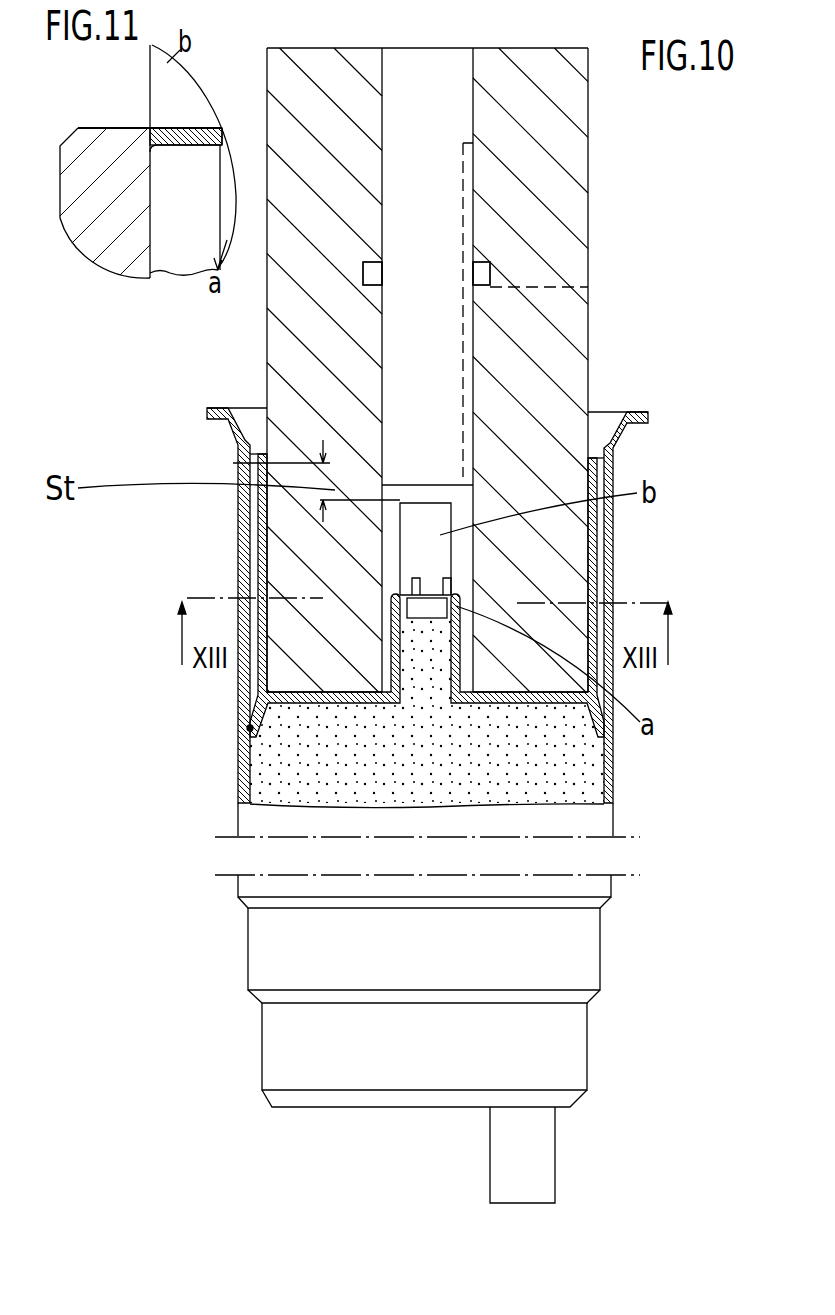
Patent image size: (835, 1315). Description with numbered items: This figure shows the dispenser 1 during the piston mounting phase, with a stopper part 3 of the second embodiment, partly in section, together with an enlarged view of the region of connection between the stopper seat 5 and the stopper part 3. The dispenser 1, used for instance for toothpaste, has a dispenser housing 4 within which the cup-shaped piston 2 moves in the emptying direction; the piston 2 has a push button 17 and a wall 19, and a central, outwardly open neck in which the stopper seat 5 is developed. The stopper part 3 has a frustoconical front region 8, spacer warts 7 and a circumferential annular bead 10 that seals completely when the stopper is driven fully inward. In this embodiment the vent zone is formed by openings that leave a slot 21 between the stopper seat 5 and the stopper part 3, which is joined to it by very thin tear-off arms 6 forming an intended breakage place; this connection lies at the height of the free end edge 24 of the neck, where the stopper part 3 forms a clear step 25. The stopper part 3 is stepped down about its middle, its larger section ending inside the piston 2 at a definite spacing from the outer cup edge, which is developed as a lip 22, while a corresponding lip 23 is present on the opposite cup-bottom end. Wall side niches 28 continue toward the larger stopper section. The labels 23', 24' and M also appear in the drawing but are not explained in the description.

In FIG. 10, the dispenser 1 is at (612, 775).
In FIG. 10, the piston 2 is at (585, 943).
In FIG. 11, the stopper part 3 is at (195, 92).
In FIG. 10, the dispenser housing 4 is at (312, 1107).
In FIG. 10, the stopper seat 5 is at (537, 1165).
In FIG. 11, the tear-off arms 6 is at (162, 137).
In FIG. 10, the tear-off arms 6 is at (268, 700).
In FIG. 11, the spacer warts 7 is at (140, 243).
In FIG. 10, the spacer warts 7 is at (392, 656).
In FIG. 10, the front region 8 is at (390, 594).
In FIG. 10, the annular bead 10 is at (390, 590).
In FIG. 10, the push button 17 is at (540, 713).
In FIG. 10, the wall 19 is at (445, 547).
In FIG. 11, the slot 21 is at (177, 188).
In FIG. 10, the lip 22 is at (420, 523).
In FIG. 10, the lip 23 is at (432, 551).
In FIG. 10, the groove alternative 23' is at (622, 326).
In FIG. 11, the free end edge 24 is at (217, 175).
In FIG. 10, the free end edge 24 is at (351, 370).
In FIG. 10, the bore alternative 24' is at (609, 310).
In FIG. 11, the step 25 is at (215, 128).
In FIG. 10, the wall side niches 28 is at (452, 588).
In FIG. 10, the filling material M is at (613, 802).